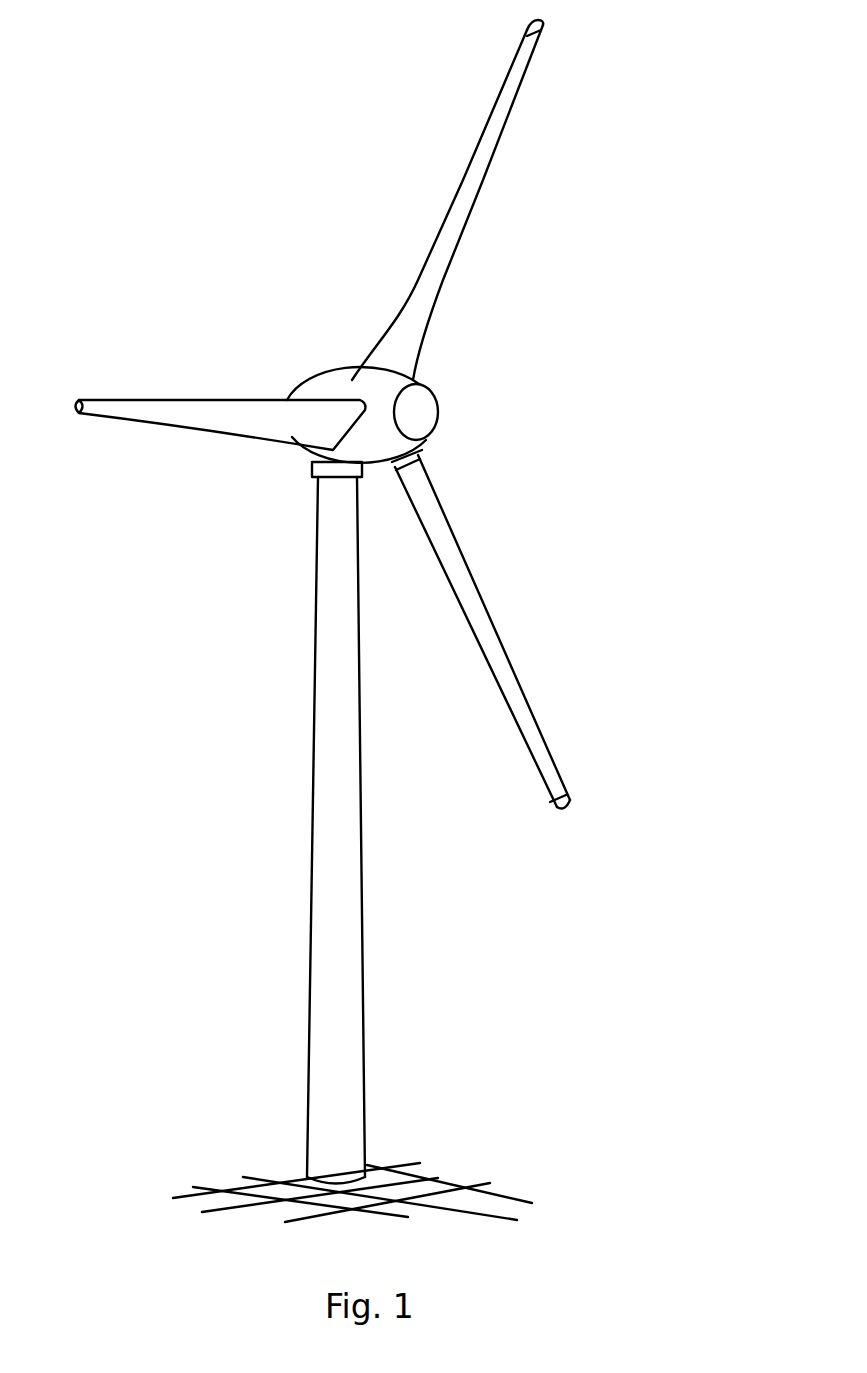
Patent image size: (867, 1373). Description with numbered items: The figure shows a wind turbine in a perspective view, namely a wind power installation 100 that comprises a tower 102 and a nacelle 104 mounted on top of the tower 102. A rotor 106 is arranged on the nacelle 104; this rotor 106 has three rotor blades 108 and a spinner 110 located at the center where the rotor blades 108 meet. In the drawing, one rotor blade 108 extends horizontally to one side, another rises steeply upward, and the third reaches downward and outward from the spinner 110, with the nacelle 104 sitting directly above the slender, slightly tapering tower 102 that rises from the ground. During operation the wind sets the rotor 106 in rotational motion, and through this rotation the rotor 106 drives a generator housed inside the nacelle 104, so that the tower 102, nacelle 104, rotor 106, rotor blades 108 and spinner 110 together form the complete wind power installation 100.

The wind power installation 100 is at (270, 547).
The tower 102 is at (343, 937).
The nacelle 104 is at (328, 383).
The rotor 106 is at (510, 333).
The rotor blades 108 is at (485, 155).
The spinner 110 is at (420, 413).